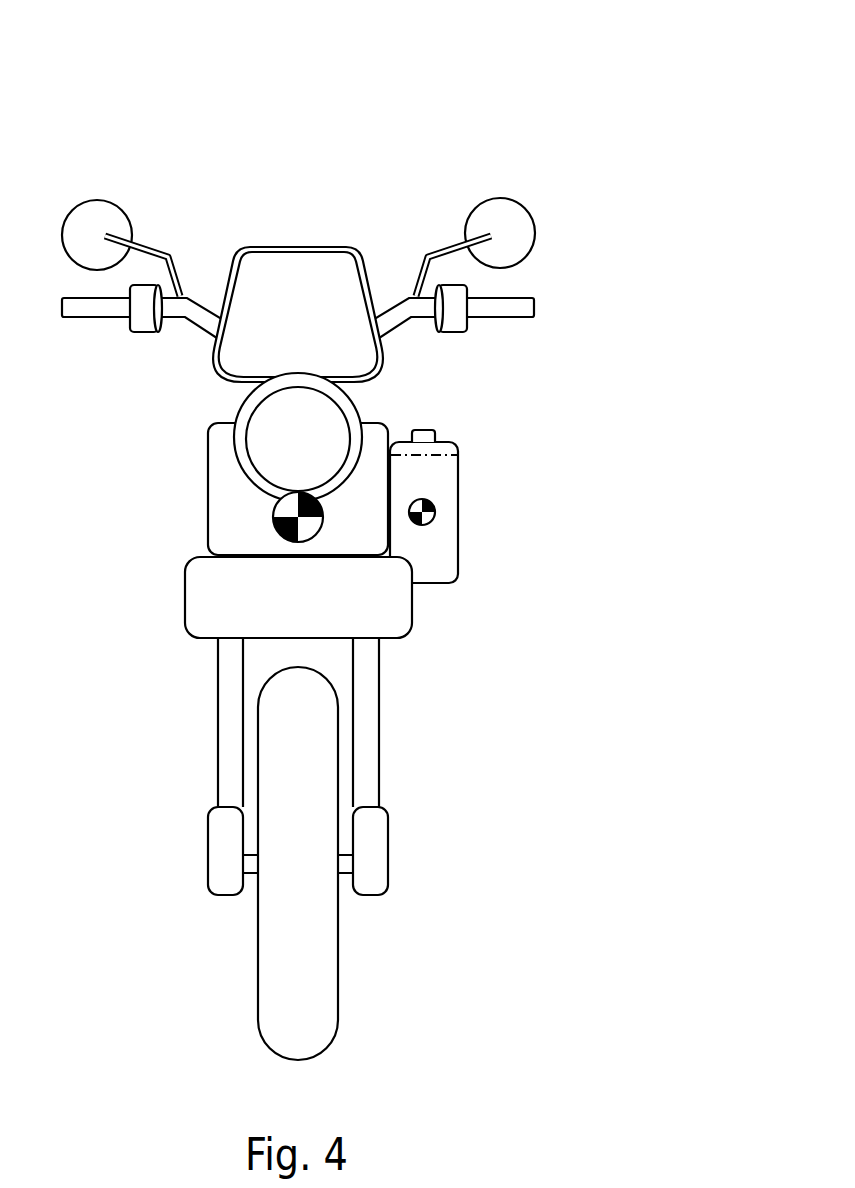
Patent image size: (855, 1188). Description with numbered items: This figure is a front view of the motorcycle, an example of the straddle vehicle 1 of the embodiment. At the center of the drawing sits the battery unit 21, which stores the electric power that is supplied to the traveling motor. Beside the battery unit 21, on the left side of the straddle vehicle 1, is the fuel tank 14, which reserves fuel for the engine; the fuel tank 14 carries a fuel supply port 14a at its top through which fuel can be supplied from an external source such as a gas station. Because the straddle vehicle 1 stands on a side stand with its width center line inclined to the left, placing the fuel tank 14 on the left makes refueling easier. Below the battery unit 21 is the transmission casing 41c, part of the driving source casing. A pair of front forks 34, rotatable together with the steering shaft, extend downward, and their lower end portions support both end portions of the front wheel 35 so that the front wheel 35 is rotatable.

The straddle vehicle 1 is at (486, 113).
The fuel tank 14 is at (443, 480).
The fuel supply port 14a is at (427, 432).
The battery unit 21 is at (227, 510).
The transmission casing 41c is at (203, 605).
The front forks 34 is at (227, 745).
The front wheel 35 is at (258, 1003).